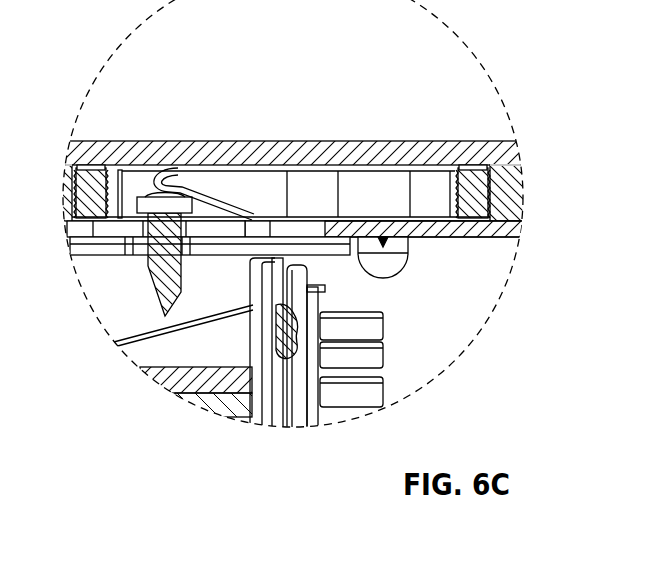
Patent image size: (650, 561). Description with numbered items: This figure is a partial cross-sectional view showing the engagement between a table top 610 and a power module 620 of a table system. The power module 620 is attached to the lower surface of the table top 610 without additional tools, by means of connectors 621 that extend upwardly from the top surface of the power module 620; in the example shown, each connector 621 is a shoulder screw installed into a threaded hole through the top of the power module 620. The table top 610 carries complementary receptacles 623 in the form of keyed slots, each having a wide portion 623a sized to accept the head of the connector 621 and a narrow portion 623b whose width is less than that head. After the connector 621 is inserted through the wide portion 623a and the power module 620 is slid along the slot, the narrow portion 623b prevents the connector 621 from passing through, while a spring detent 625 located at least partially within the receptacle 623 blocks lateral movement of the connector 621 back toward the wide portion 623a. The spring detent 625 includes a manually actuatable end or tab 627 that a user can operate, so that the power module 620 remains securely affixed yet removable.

The table top 610 is at (441, 138).
The power module 620 is at (325, 262).
The connector 621 is at (205, 190).
The complementary receptacle 623 is at (445, 238).
The wide portion 623a is at (313, 230).
The narrow portion 623b is at (207, 228).
The spring detent 625 is at (160, 193).
The manually actuatable end or tab 627 is at (405, 266).